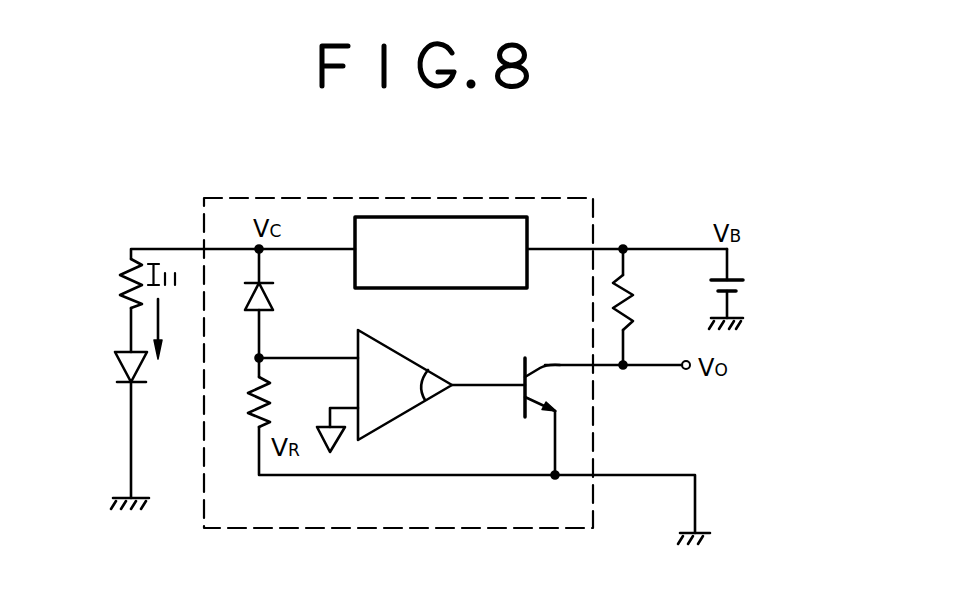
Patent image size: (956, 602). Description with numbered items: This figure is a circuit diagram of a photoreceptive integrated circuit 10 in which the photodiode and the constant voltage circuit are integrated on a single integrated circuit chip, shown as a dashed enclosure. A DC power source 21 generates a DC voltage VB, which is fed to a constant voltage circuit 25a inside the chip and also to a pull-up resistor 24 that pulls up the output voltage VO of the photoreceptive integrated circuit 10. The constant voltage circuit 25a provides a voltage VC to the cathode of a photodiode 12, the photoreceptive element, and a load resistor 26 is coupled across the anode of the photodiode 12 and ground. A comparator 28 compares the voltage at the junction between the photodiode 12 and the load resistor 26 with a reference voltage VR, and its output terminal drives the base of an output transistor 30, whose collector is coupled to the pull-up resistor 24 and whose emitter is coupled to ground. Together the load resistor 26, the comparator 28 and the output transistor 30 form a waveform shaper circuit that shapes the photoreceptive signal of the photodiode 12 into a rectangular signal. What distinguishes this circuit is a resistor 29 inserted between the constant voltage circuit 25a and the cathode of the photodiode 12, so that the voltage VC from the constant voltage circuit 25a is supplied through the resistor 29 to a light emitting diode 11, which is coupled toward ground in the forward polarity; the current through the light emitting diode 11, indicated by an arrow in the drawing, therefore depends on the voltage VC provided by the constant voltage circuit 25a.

The photoreceptive integrated circuit 10 is at (520, 528).
The constant voltage circuit 25a is at (502, 217).
The resistor 29 is at (120, 290).
The light emitting diode 11 is at (119, 369).
The photodiode 12 is at (273, 302).
The load resistor 26 is at (265, 402).
The comparator 28 is at (413, 362).
The output transistor 30 is at (539, 366).
The pull-up resistor 24 is at (632, 302).
The DC power source 21 is at (782, 296).